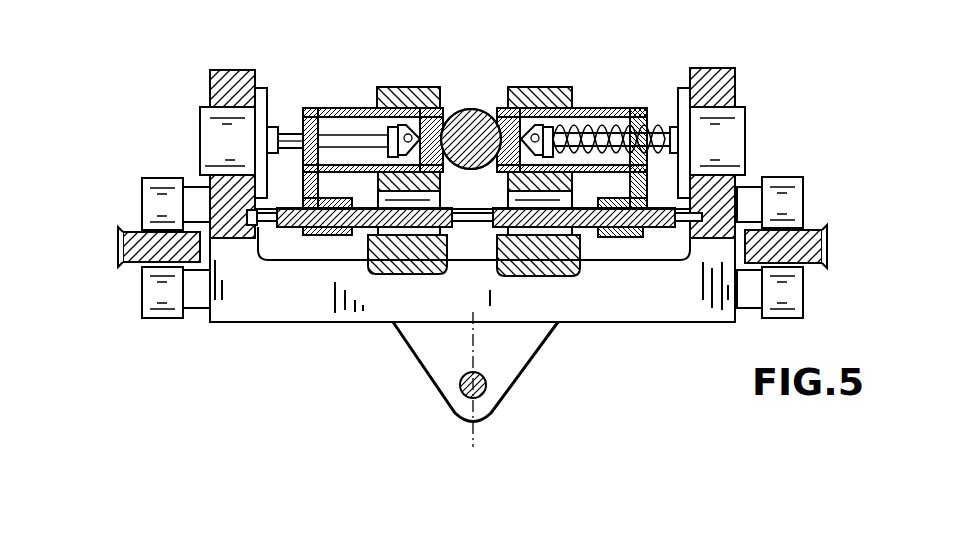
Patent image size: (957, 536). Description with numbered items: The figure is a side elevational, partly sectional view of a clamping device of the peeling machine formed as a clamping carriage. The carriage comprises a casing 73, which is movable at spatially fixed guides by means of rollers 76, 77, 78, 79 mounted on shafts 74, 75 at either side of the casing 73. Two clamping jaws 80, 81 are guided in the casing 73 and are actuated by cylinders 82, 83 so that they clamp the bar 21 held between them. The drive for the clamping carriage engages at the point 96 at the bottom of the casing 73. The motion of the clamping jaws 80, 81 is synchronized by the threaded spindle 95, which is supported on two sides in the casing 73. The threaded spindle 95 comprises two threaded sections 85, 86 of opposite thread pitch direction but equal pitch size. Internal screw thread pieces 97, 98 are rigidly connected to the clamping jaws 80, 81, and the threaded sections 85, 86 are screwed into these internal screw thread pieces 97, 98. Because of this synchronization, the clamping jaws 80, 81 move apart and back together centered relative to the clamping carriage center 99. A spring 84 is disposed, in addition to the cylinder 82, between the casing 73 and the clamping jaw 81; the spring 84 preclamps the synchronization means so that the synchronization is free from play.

The bar 21 is at (481, 110).
The casing 73 is at (265, 305).
The left shaft 74 is at (120, 250).
The right shaft 75 is at (822, 243).
The roller 76 is at (160, 187).
The roller 77 is at (162, 310).
The roller 78 is at (797, 192).
The roller 79 is at (803, 297).
The clamping jaw 80 is at (352, 108).
The clamping jaw 81 is at (598, 108).
The cylinder 82 is at (735, 132).
The cylinder 83 is at (207, 130).
The spring 84 is at (658, 125).
The threaded section 85 is at (365, 227).
The threaded section 86 is at (662, 227).
The threaded spindle 95 is at (473, 258).
The point 96 is at (483, 393).
The internal screw thread piece 97 is at (325, 235).
The internal screw thread piece 98 is at (635, 238).
The clamping carriage center 99 is at (477, 334).